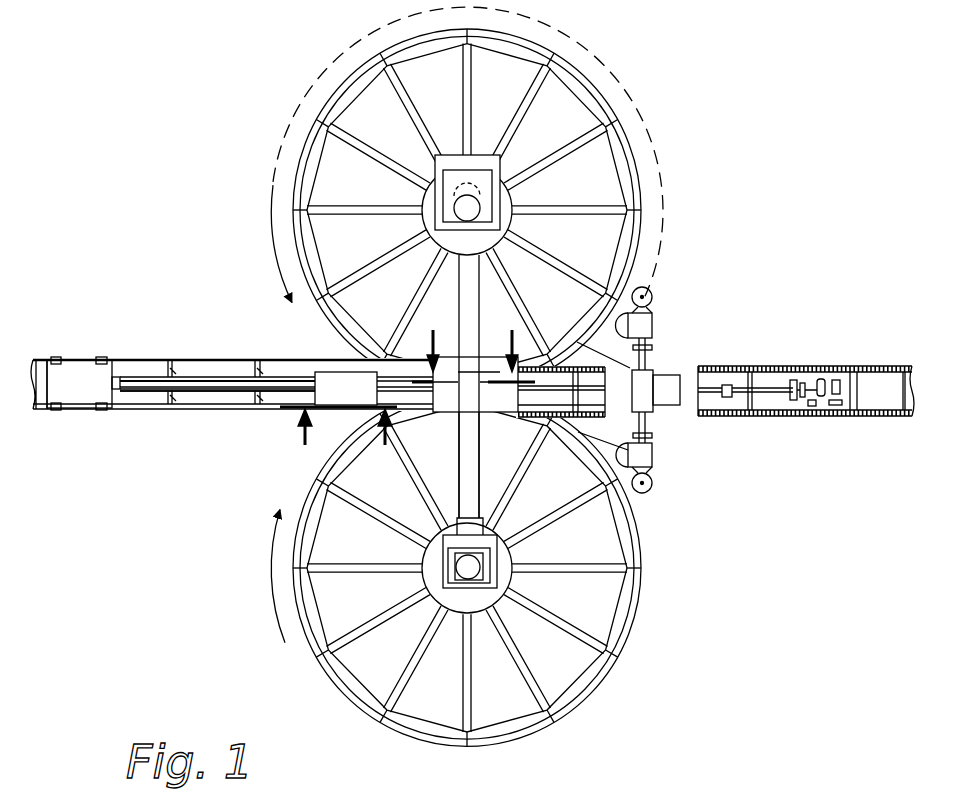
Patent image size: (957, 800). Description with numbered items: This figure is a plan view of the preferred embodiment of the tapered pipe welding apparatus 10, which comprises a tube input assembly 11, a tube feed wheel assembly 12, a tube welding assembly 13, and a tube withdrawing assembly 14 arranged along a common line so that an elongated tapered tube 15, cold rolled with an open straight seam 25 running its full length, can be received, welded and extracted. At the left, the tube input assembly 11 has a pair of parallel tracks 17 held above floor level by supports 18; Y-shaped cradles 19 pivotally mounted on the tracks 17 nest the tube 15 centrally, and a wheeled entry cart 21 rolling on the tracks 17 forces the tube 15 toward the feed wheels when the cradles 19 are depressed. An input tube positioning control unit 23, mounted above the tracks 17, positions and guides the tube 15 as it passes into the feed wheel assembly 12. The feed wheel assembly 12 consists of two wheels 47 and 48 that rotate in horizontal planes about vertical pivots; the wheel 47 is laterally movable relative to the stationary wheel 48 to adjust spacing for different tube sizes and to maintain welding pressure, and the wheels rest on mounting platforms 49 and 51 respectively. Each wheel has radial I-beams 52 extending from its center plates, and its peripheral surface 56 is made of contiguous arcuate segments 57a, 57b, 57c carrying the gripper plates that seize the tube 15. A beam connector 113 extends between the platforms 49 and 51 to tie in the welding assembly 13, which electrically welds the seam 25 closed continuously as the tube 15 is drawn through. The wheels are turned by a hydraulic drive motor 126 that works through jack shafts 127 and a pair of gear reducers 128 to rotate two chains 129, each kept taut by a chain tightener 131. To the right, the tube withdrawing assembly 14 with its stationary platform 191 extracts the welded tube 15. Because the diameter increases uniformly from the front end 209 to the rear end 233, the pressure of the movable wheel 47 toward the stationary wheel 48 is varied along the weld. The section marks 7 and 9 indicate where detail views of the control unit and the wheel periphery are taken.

The tapered pipe welding apparatus 10 is at (706, 114).
The tube input assembly 11 is at (232, 377).
The tube feed wheel assembly 12 is at (268, 490).
The tube welding assembly 13 is at (455, 420).
The tube withdrawing assembly 14 is at (806, 390).
The tapered tube 15 is at (230, 377).
The tracks 17 is at (193, 372).
The supports 18 is at (255, 377).
The Y-shaped cradles 19 is at (283, 372).
The wheeled entry cart 21 is at (84, 365).
The input tube positioning control unit 23 is at (338, 360).
The straight seam 25 is at (205, 390).
The laterally movable wheel 47 is at (497, 224).
The stationary wheel 48 is at (569, 584).
The mounting platform 49 is at (545, 196).
The mounting platform 51 is at (535, 560).
The I-beams 52 is at (562, 215).
The peripheral surface 56 is at (597, 52).
The arcuate segment 57a is at (618, 150).
The arcuate segment 57b is at (638, 228).
The arcuate segment 57c is at (578, 330).
The beam connector 113 is at (482, 430).
The hydraulic drive motor 126 is at (660, 378).
The jack shafts 127 is at (652, 346).
The gear reducers 128 is at (653, 330).
The chains 129 is at (653, 292).
The chain tightener 131 is at (655, 318).
The stationary platform 191 is at (777, 417).
The front end 209 is at (719, 388).
The rear end 233 is at (135, 389).
The section line 7- 7 is at (341, 447).
The section line 9- 9 is at (470, 348).